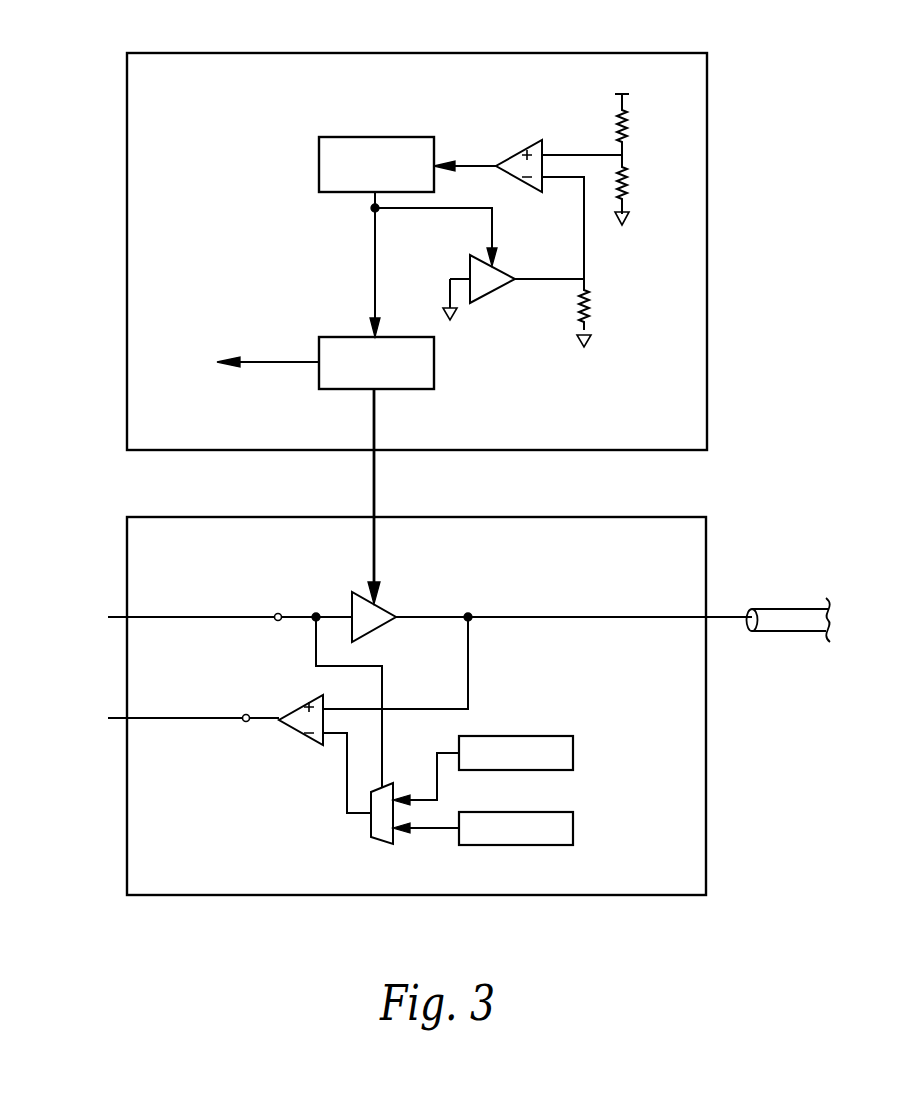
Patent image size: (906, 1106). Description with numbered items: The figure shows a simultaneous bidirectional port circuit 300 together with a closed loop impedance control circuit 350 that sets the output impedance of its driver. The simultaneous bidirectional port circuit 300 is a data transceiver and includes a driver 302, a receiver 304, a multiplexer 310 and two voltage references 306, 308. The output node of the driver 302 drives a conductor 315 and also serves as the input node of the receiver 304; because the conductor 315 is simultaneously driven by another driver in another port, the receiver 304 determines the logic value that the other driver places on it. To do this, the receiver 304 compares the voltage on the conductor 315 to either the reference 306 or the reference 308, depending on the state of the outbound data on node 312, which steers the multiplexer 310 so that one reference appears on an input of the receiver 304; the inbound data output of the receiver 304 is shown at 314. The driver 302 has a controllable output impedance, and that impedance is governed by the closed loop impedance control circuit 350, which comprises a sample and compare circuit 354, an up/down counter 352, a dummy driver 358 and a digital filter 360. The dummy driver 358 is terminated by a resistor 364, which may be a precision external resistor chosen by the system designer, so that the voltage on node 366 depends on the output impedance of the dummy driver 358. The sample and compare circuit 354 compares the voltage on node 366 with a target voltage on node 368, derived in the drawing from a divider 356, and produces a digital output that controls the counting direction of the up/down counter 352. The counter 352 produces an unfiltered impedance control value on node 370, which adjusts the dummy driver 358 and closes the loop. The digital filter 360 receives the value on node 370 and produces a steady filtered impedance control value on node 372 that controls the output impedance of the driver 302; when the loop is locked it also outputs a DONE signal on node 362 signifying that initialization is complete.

The closed loop impedance control circuit 350 is at (211, 54).
The up/down counter 352 is at (339, 136).
The sample and compare circuit 354 is at (512, 154).
The resistor voltage divider 356 is at (630, 125).
The dummy driver 358 is at (469, 267).
The digital filter 360 is at (340, 337).
The DONE signal node 362 is at (258, 362).
The resistor 364 is at (580, 298).
The node 366 is at (534, 279).
The node 368 is at (552, 154).
The node 370 is at (372, 232).
The node 372 is at (376, 412).
The simultaneous bidirectional port circuit 300 is at (223, 516).
The driver 302 is at (351, 602).
The receiver 304 is at (300, 743).
The voltage reference 306 is at (561, 736).
The voltage reference 308 is at (561, 812).
The multiplexer 310 is at (376, 843).
The node 312 is at (276, 613).
The inbound data output 314 is at (243, 717).
The conductor 315 is at (774, 610).